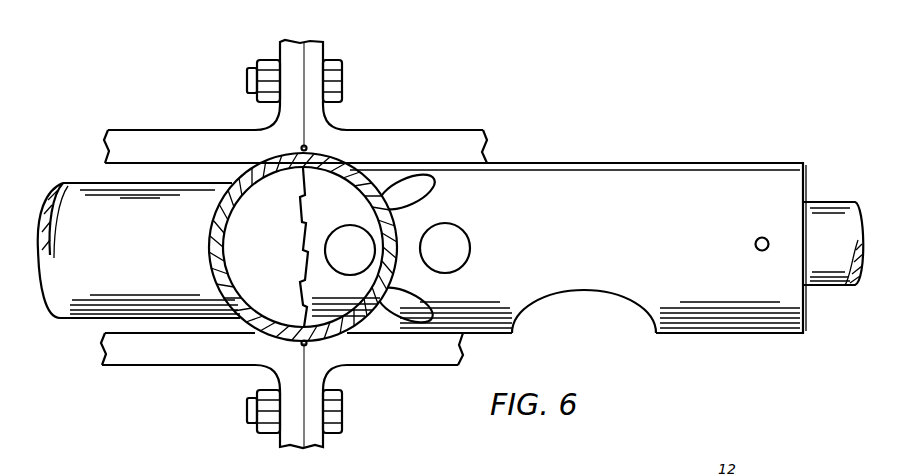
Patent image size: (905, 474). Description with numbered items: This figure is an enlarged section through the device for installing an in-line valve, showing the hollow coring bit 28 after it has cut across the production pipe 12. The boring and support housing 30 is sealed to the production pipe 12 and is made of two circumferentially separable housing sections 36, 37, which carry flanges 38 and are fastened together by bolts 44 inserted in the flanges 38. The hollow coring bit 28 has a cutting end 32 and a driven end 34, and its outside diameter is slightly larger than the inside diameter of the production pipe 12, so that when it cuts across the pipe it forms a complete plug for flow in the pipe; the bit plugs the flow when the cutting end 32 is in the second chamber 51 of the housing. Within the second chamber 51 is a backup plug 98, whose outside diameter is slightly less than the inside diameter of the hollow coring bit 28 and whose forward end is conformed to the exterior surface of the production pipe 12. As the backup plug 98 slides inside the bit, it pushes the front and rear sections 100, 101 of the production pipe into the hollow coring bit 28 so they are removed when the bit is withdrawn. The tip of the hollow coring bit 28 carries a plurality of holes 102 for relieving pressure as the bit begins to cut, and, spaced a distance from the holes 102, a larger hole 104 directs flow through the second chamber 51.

The production pipe 12 is at (312, 350).
The hollow coring bit 28 is at (600, 170).
The boring and support housing 30 is at (430, 138).
The cutting end 32 is at (300, 252).
The driven end 34 is at (805, 175).
The housing section 36 is at (380, 137).
The housing section 37 is at (203, 137).
The flanges 38 is at (312, 58).
The bolts 44 is at (343, 83).
The second chamber 51 is at (165, 327).
The backup plug 98 is at (82, 320).
The front section of production pipe 100 is at (398, 273).
The rear section of production pipe 101 is at (212, 238).
The holes 102 is at (457, 245).
The larger hole 104 is at (598, 308).